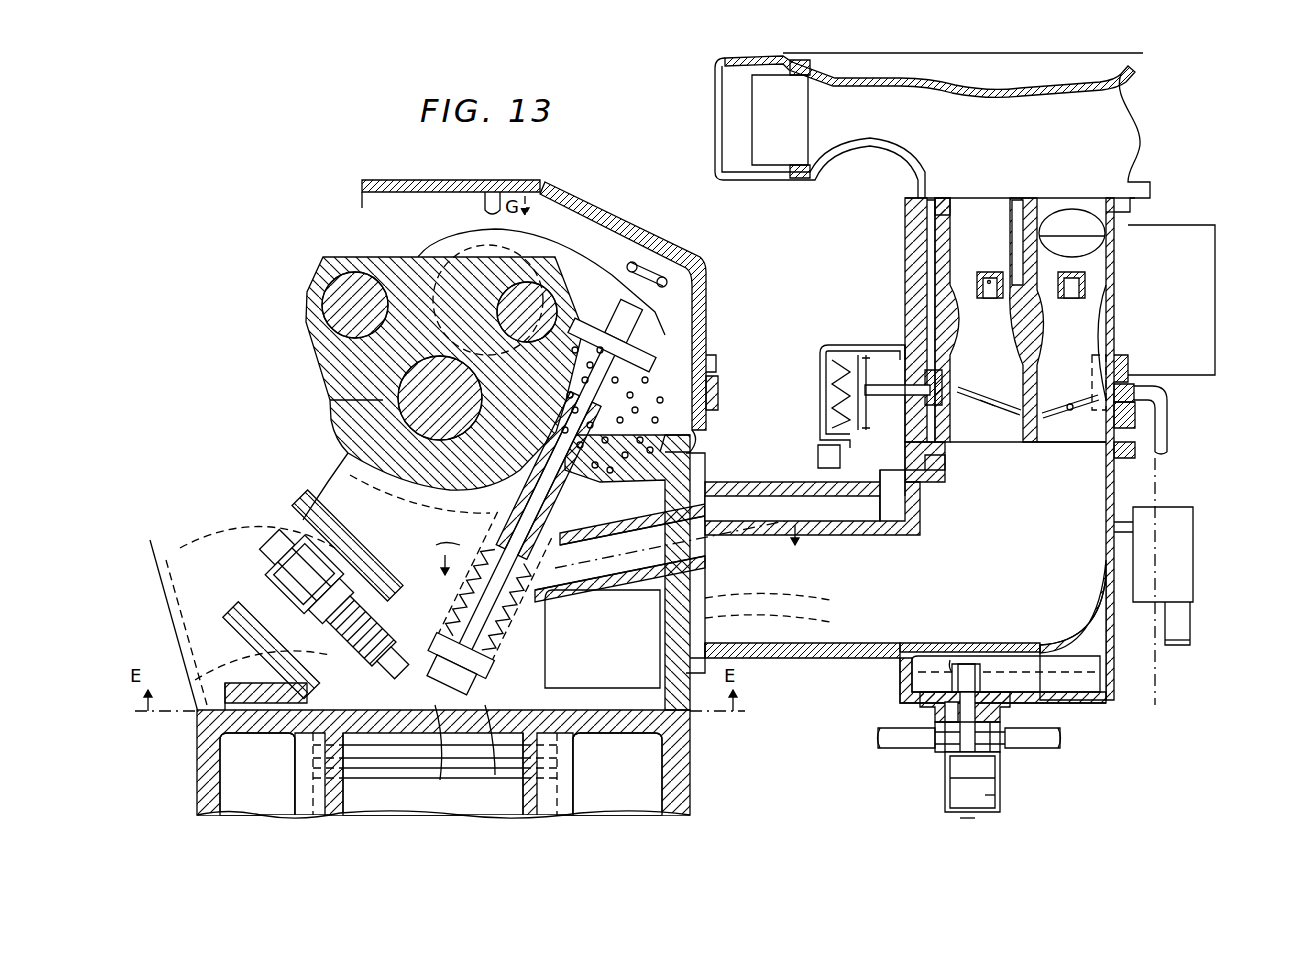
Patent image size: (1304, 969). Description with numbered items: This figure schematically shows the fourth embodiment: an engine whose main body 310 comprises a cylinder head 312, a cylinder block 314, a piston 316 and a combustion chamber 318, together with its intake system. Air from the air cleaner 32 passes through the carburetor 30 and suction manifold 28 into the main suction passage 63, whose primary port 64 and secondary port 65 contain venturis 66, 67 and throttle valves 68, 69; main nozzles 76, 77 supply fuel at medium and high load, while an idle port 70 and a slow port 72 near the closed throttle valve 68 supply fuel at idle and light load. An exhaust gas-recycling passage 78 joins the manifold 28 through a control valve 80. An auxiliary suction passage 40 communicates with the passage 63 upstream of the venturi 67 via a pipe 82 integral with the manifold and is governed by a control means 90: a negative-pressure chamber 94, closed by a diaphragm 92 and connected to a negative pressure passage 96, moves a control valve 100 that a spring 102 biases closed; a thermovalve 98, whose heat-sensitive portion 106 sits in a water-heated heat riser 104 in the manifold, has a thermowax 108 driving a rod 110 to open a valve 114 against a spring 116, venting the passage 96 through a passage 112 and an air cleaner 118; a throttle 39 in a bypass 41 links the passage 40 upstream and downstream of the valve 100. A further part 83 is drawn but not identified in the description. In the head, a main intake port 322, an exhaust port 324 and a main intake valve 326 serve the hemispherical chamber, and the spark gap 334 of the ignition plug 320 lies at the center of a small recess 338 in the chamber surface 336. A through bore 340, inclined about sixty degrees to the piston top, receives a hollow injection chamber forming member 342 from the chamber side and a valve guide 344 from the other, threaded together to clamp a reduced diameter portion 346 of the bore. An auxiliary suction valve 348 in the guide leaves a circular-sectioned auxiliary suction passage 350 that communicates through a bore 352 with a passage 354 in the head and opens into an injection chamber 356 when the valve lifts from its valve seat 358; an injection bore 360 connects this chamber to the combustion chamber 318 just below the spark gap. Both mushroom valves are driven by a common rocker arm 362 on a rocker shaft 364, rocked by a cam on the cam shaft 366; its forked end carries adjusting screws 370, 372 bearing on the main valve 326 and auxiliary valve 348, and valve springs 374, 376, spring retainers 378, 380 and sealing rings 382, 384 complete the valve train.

The suction manifold 28 is at (800, 662).
The carburetor 30 is at (1145, 218).
The air cleaner 32 is at (1005, 60).
The throttle 39 is at (950, 410).
The auxiliary suction passage 40 is at (860, 462).
The bypass 41 is at (944, 385).
The main suction passage 63 is at (1033, 190).
The primary port 64 is at (1049, 359).
The secondary port 65 is at (966, 359).
The venturi 66 is at (1071, 298).
The venturi 67 is at (990, 296).
The throttle valve 68 is at (1062, 418).
The throttle valve 69 is at (995, 412).
The idle port 70 is at (1083, 418).
The slow port 72 is at (1098, 385).
The main nozzle 76 is at (1071, 280).
The main nozzle 77 is at (989, 282).
The exhaust gas-recycling passage 78 is at (1170, 640).
The control valve 80 is at (1170, 540).
The pipe 82 is at (898, 525).
The air cleaner mounting 83 is at (942, 210).
The control means 90 is at (836, 340).
The diaphragm 92 is at (858, 355).
The negative-pressure chamber 94 is at (832, 382).
The negative pressure passage 96 is at (838, 455).
The thermovalve 98 is at (942, 812).
The control valve 100 is at (880, 380).
The spring 102 is at (858, 405).
The heat riser 104 is at (1027, 680).
The heat-sensitive portion 106 is at (980, 664).
The thermowax 108 is at (952, 660).
The rod 110 is at (998, 712).
The passage 112 is at (985, 780).
The valve 114 is at (940, 745).
The spring 116 is at (935, 712).
The air cleaner 118 is at (990, 800).
The main body of internal combustion engine 310 is at (300, 446).
The cylinder head 312 is at (672, 690).
The cylinder block 314 is at (684, 748).
The piston 316 is at (598, 770).
The combustion chamber 318 is at (425, 740).
The ignition plug 320 is at (315, 540).
The main suction port 322 is at (720, 620).
The exhaust port 324 is at (195, 560).
The main intake valve 326 is at (688, 446).
The spark gap 334 is at (300, 725).
The surface of combustion chamber 336 is at (320, 668).
The small recess 338 is at (470, 585).
The through bore 340 is at (450, 512).
The injection chamber forming member 342 is at (497, 754).
The valve guide 344 is at (605, 458).
The reduced diameter portion 346 is at (530, 620).
The auxiliary suction valve 348 is at (545, 455).
The auxiliary suction passage 350 is at (535, 480).
The bore 352 is at (570, 604).
The passage 354 is at (715, 570).
The injection chamber 356 is at (500, 674).
The valve seat 358 is at (505, 638).
The injection bore 360 is at (440, 754).
The rocker arm 362 is at (612, 270).
The rocker shaft 364 is at (510, 285).
The cam shaft 366 is at (415, 380).
The adjusting screw 370 is at (665, 268).
The adjusting screw 372 is at (650, 318).
The valve spring 374 is at (700, 425).
The valve spring 376 is at (712, 388).
The spring retainer 378 is at (660, 340).
The spring retainer 380 is at (708, 362).
The sealing ring 382 is at (495, 550).
The sealing ring 384 is at (430, 562).